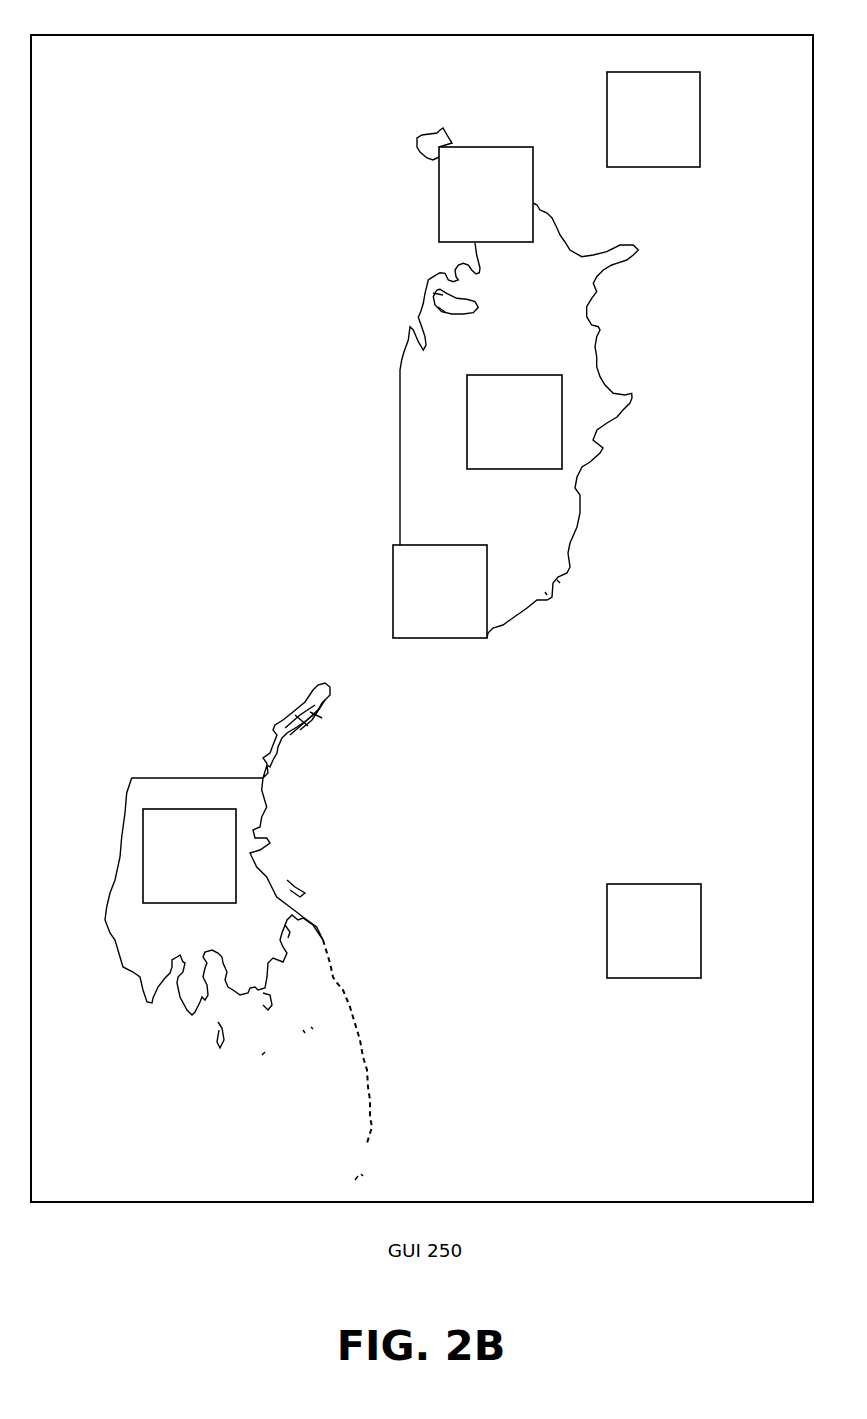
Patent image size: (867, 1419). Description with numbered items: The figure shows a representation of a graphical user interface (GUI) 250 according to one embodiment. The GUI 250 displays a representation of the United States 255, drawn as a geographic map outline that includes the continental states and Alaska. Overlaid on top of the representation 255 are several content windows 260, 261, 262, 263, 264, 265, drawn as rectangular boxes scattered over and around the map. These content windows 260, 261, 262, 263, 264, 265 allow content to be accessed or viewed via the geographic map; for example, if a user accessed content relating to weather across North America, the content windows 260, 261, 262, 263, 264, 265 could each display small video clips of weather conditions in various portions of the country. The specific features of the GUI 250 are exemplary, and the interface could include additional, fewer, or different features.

The graphical user interface 250 is at (75, 76).
The representation of the United States 255 is at (386, 462).
The content window 260 is at (486, 194).
The content window 261 is at (653, 119).
The content window 262 is at (514, 422).
The content window 263 is at (440, 591).
The content window 264 is at (189, 856).
The content window 265 is at (654, 931).